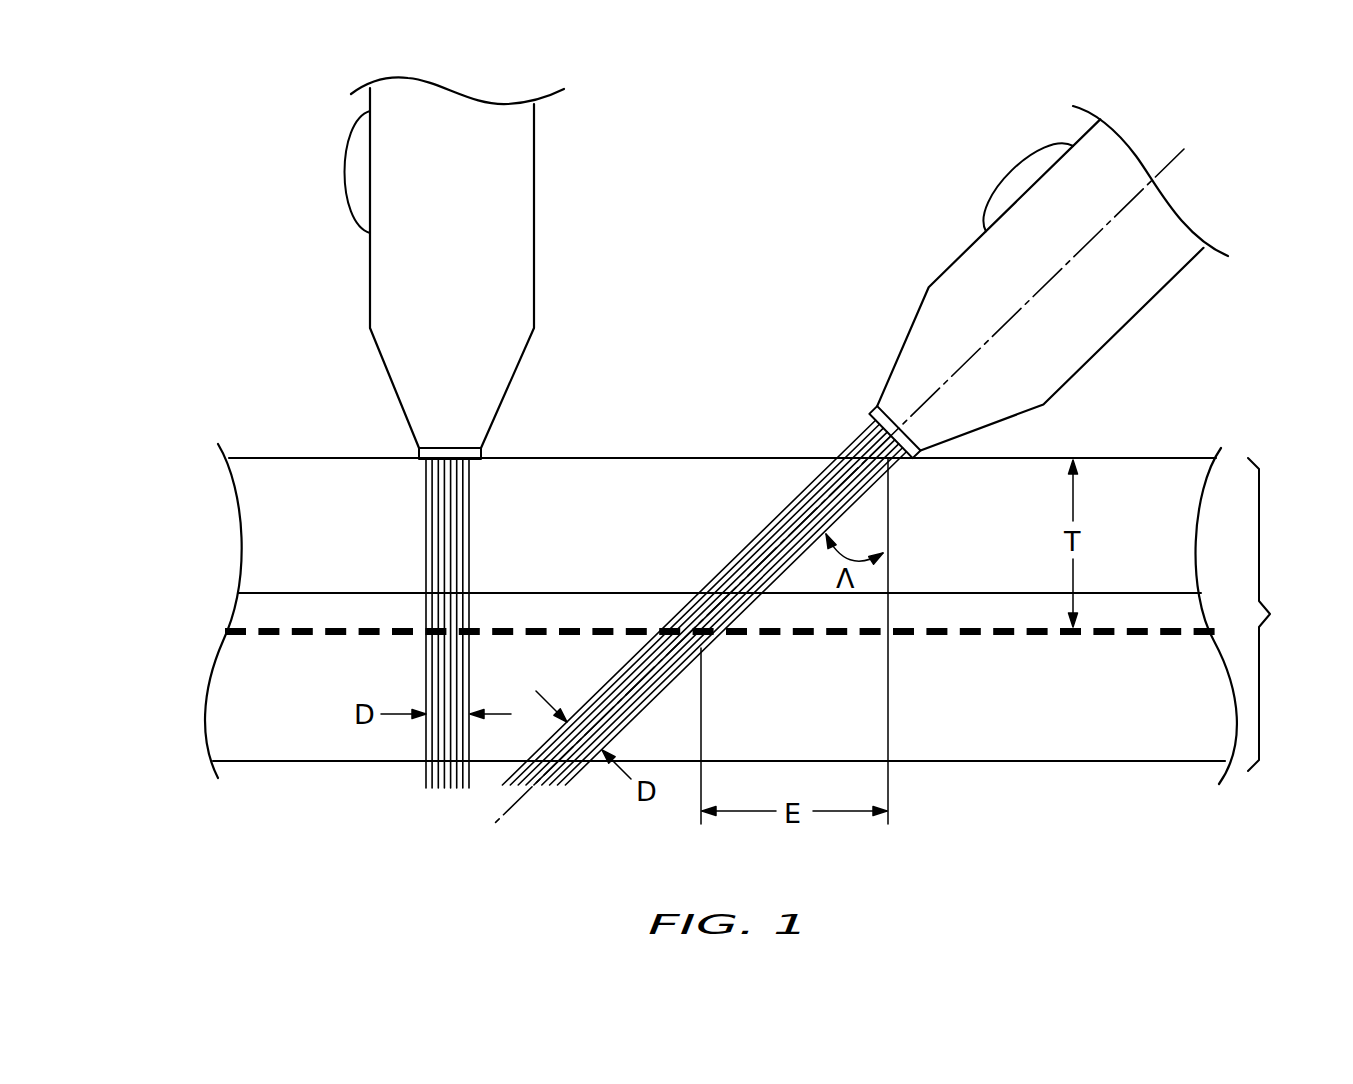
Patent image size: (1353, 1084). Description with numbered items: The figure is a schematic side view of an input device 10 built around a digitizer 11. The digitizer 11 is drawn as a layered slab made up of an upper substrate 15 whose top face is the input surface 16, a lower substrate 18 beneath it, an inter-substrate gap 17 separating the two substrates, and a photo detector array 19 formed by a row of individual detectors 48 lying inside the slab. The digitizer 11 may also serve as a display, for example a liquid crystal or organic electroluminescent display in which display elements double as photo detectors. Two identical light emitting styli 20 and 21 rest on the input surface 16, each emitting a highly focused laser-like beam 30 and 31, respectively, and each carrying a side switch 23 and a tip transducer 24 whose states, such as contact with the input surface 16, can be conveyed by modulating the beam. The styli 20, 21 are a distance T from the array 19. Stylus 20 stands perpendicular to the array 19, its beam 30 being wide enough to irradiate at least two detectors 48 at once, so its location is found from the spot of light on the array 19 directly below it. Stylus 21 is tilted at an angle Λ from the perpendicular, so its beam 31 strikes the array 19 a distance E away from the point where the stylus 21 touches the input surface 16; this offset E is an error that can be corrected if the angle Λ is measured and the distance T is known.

The input device 10 is at (712, 241).
The digitizer 11 is at (720, 590).
The upper substrate 15 is at (255, 508).
The input surface 16 is at (277, 457).
The inter-substrate gap 17 is at (240, 607).
The lower substrate 18 is at (225, 723).
The photo detector array 19 is at (262, 633).
The light emitting stylus 20 is at (369, 283).
The light emitting stylus 21 is at (952, 290).
The side switch 23 is at (343, 163).
The tip transducer 24 is at (418, 452).
The light beam 30 is at (470, 510).
The light beam 31 is at (770, 523).
The detectors 48 is at (937, 635).